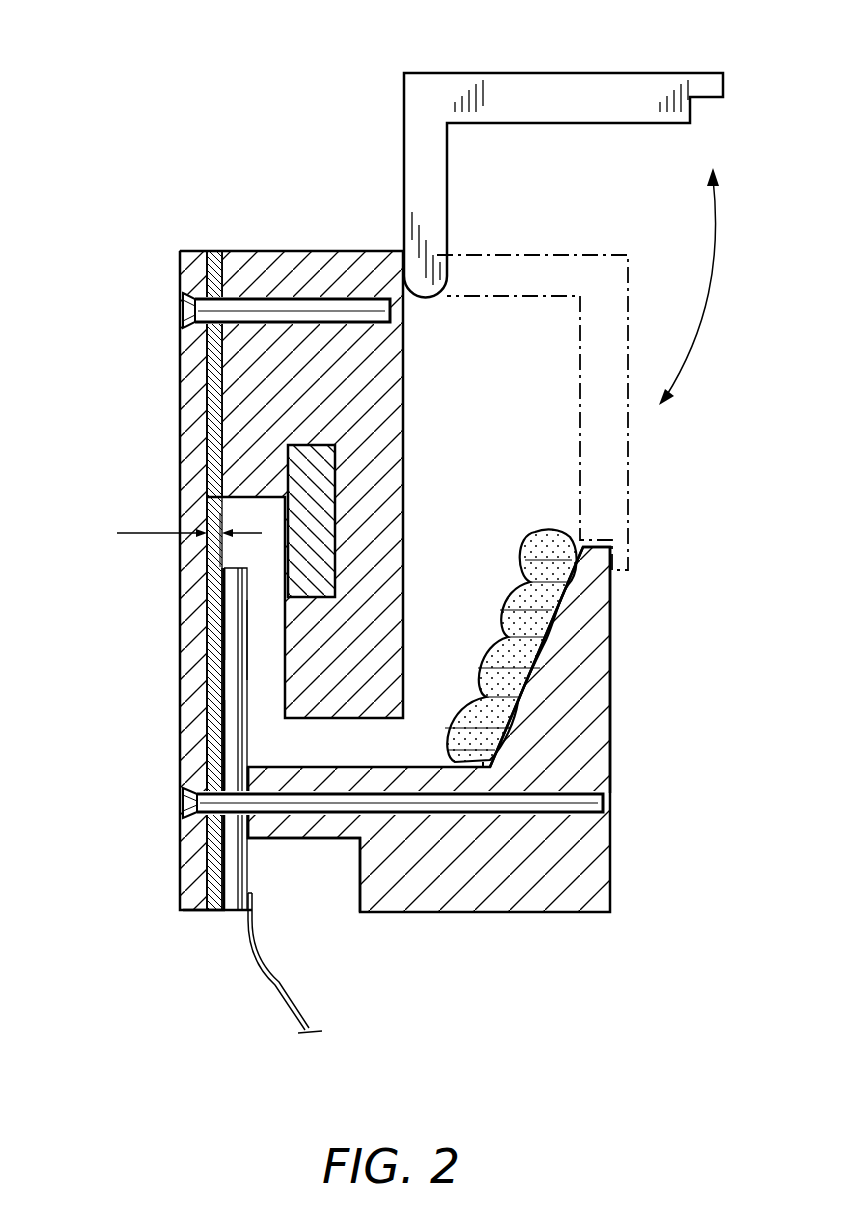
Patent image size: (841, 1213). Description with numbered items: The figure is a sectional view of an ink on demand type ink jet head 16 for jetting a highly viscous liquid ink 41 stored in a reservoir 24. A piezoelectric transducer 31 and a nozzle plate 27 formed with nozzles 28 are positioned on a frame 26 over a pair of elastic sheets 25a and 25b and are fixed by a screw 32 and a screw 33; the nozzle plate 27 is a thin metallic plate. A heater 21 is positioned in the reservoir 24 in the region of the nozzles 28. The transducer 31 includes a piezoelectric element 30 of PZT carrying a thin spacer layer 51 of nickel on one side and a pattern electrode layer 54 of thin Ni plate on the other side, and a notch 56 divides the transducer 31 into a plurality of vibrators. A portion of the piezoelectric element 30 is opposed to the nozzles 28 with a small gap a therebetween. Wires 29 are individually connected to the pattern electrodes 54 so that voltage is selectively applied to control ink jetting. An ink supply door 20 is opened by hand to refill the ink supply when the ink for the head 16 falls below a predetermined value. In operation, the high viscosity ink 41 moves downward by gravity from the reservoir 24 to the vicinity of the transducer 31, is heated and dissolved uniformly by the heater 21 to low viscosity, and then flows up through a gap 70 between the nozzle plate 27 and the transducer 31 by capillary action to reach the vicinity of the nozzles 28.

The ink jet head 16 is at (700, 570).
The ink supply door 20 is at (460, 80).
The heater 21 is at (286, 468).
The reservoir 24 is at (477, 633).
The elastic sheet 25a is at (218, 251).
The elastic sheet 25b is at (257, 832).
The frame 26 is at (452, 897).
The nozzle plate 27 is at (192, 407).
The nozzles 28 is at (196, 592).
The wires 29 is at (288, 993).
The piezoelectric element 30 is at (233, 665).
The piezoelectric transducer 31 is at (232, 925).
The screw 32 is at (607, 799).
The screw 33 is at (190, 312).
The ink 41 is at (537, 547).
The spacer layer 51 is at (216, 776).
The pattern electrode layer 54 is at (247, 698).
The notch 56 is at (220, 735).
The gap 70 is at (250, 640).
The gap a is at (213, 528).